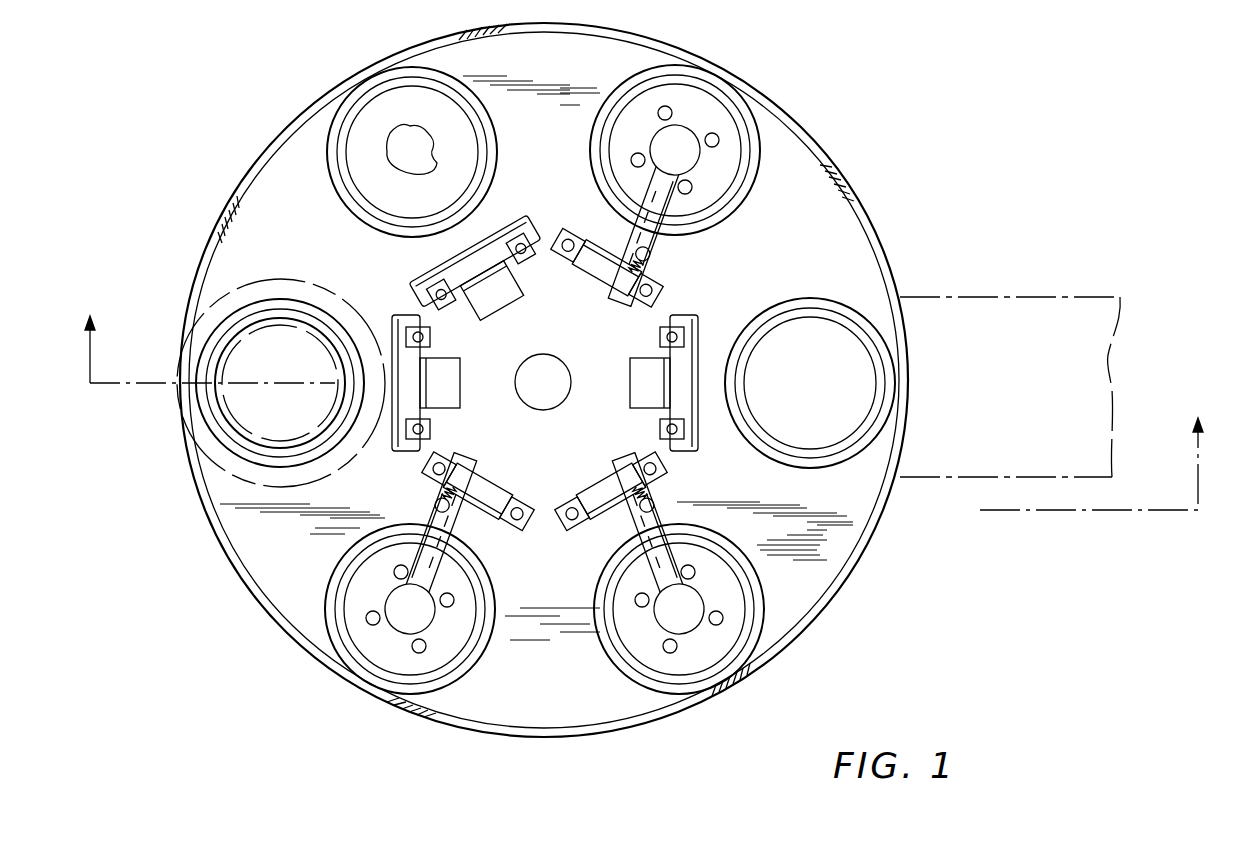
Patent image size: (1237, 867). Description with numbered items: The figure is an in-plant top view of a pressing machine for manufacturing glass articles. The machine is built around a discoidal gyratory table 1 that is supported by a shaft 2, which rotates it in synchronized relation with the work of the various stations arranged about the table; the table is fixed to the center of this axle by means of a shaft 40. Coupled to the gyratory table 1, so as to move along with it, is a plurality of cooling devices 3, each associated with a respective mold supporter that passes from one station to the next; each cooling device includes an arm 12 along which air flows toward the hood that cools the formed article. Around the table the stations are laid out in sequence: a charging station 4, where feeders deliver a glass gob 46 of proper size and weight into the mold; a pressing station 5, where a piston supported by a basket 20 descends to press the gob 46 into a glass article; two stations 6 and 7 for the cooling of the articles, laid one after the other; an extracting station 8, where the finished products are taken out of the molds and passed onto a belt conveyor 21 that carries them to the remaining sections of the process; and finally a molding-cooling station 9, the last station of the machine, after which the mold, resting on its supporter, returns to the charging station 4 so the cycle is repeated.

The discoidal gyratory table 1 is at (830, 568).
The shaft 2 is at (638, 399).
The cooling device 3 is at (660, 288).
The charging station 4 is at (422, 80).
The pressing station 5 is at (205, 425).
The cooling station 6 is at (345, 650).
The cooling station 7 is at (742, 654).
The extracting station 8 is at (886, 292).
The molding-cooling station 9 is at (748, 127).
The arm 12 is at (655, 192).
The basket 20 is at (222, 297).
The belt conveyor 21 is at (1068, 300).
The shaft 40 is at (572, 373).
The glass gob 46 is at (385, 140).